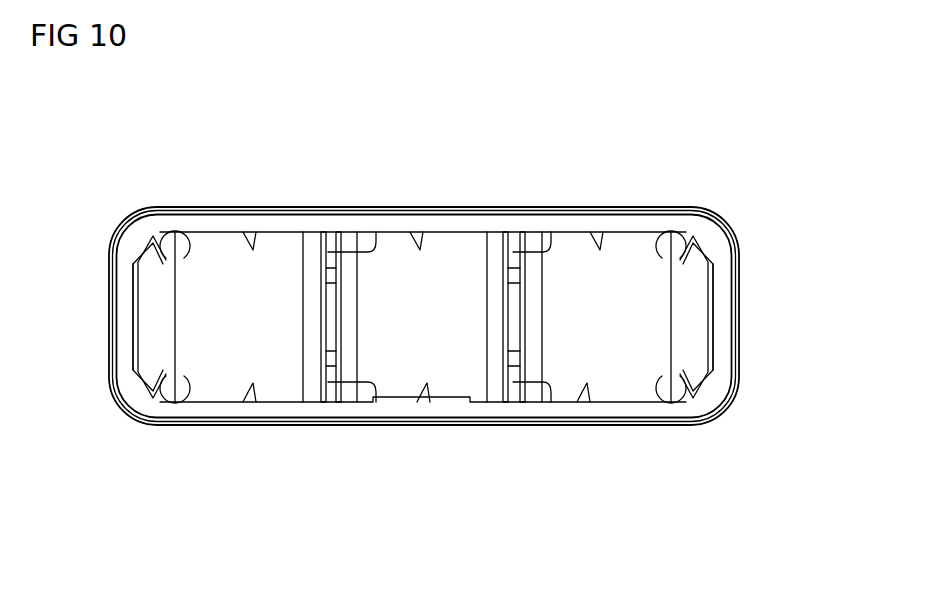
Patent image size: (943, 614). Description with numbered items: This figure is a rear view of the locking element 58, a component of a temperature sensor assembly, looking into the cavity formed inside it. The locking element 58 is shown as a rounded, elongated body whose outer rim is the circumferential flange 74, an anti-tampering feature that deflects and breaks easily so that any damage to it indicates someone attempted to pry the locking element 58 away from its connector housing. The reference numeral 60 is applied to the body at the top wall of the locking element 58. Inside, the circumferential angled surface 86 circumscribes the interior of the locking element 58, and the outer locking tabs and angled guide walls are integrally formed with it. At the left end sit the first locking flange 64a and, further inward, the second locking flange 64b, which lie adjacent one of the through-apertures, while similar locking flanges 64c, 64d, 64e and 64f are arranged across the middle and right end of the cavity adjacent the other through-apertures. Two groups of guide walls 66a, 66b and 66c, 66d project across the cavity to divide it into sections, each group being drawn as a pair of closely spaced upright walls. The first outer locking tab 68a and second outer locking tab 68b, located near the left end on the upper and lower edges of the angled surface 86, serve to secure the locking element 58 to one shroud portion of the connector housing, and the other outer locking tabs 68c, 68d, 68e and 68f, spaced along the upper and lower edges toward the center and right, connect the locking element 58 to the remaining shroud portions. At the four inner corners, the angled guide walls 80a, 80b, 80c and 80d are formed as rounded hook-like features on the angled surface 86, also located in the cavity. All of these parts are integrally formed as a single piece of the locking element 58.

The locking element 58 is at (228, 512).
The housing 60 is at (509, 214).
The first locking flange 64a is at (155, 316).
The second locking flange 64b is at (312, 294).
The locking flange 64c is at (350, 306).
The locking flange 64d is at (495, 294).
The locking flange 64e is at (535, 306).
The locking flange 64f is at (690, 316).
The guide wall 66a is at (362, 408).
The guide wall 66b is at (366, 251).
The guide wall 66c is at (552, 392).
The guide wall 66d is at (546, 250).
The first outer locking tab 68a is at (253, 243).
The second outer locking tab 68b is at (254, 388).
The outer locking tab 68c is at (422, 243).
The outer locking tab 68d is at (428, 390).
The outer locking tab 68e is at (598, 243).
The outer locking tab 68f is at (588, 390).
The circumferential flange 74 is at (304, 424).
The angled guide wall 80a is at (187, 240).
The angled guide wall 80b is at (190, 392).
The angled guide wall 80c is at (659, 240).
The angled guide wall 80d is at (657, 392).
The circumferential angled surface 86 is at (335, 410).